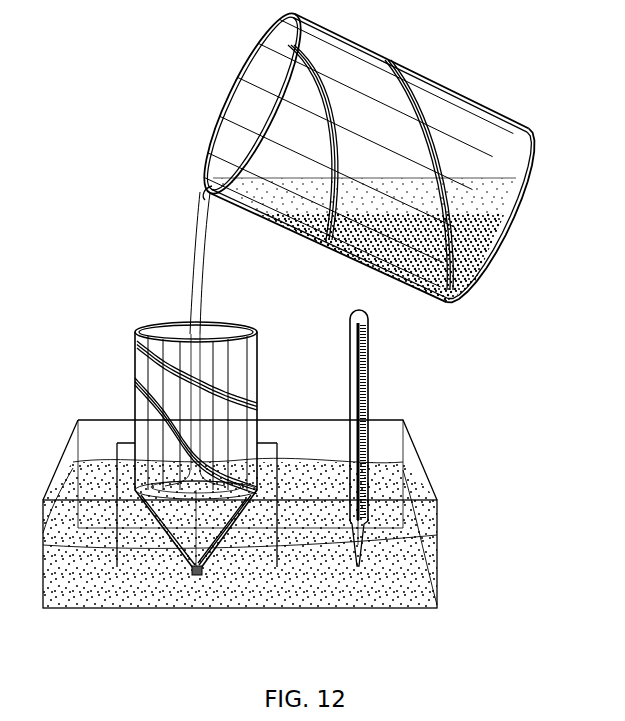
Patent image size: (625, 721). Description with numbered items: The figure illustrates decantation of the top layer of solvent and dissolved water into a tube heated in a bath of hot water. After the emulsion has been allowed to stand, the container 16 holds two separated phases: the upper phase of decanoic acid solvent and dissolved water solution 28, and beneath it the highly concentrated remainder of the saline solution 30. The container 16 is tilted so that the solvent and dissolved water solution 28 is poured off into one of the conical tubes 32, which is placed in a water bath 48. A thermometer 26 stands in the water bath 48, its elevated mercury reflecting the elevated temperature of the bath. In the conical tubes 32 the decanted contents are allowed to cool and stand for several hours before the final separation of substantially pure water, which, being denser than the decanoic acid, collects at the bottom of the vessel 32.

The container 16 is at (369, 324).
The solvent and dissolved water solution 28 is at (498, 187).
The highly concentrated remainder of the saline solution 30 is at (467, 240).
The thermometer 26 is at (370, 347).
The conical tubes 32 is at (143, 437).
The water bath 48 is at (427, 560).